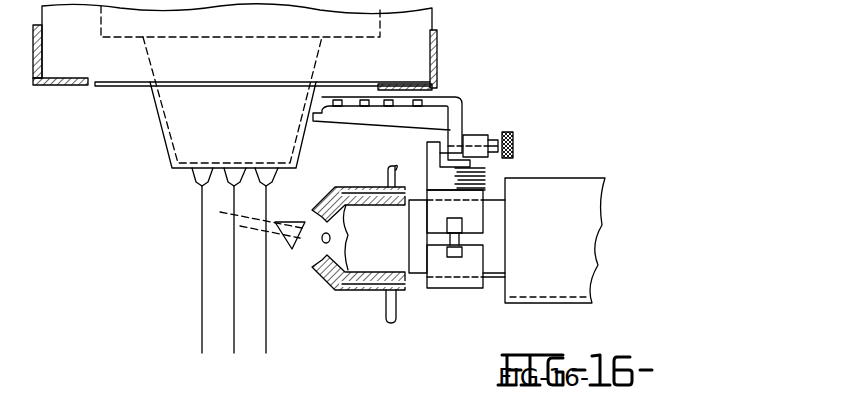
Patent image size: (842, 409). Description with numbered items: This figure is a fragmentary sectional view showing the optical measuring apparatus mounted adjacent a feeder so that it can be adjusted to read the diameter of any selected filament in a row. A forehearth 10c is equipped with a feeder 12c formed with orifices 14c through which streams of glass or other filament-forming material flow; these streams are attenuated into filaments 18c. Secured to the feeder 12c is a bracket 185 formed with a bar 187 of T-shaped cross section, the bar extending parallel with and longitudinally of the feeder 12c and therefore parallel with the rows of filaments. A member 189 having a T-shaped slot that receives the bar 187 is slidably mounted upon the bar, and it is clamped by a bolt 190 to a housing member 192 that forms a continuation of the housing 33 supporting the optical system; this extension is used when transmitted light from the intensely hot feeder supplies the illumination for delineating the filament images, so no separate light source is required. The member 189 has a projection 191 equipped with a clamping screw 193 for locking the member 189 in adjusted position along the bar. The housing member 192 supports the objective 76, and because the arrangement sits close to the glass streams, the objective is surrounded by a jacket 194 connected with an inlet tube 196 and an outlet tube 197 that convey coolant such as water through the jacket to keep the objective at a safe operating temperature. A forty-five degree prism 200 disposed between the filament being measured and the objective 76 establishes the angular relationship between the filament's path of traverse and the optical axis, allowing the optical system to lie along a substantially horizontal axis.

The forehearth 10c is at (412, 42).
The feeder 12c is at (160, 130).
The orifices 14c is at (202, 187).
The filaments 18c is at (265, 332).
The bracket 185 is at (450, 95).
The bar 187 is at (470, 160).
The member 189 is at (455, 170).
The projection 191 is at (475, 132).
The clamping screw 193 is at (510, 134).
The bolt 190 is at (460, 223).
The housing 33 is at (560, 284).
The housing member 192 is at (497, 290).
The inlet tube 196 is at (362, 170).
The outlet tube 197 is at (393, 313).
The objective 76 is at (318, 292).
The jacket 194 is at (351, 291).
The 45° prism 200 is at (292, 250).